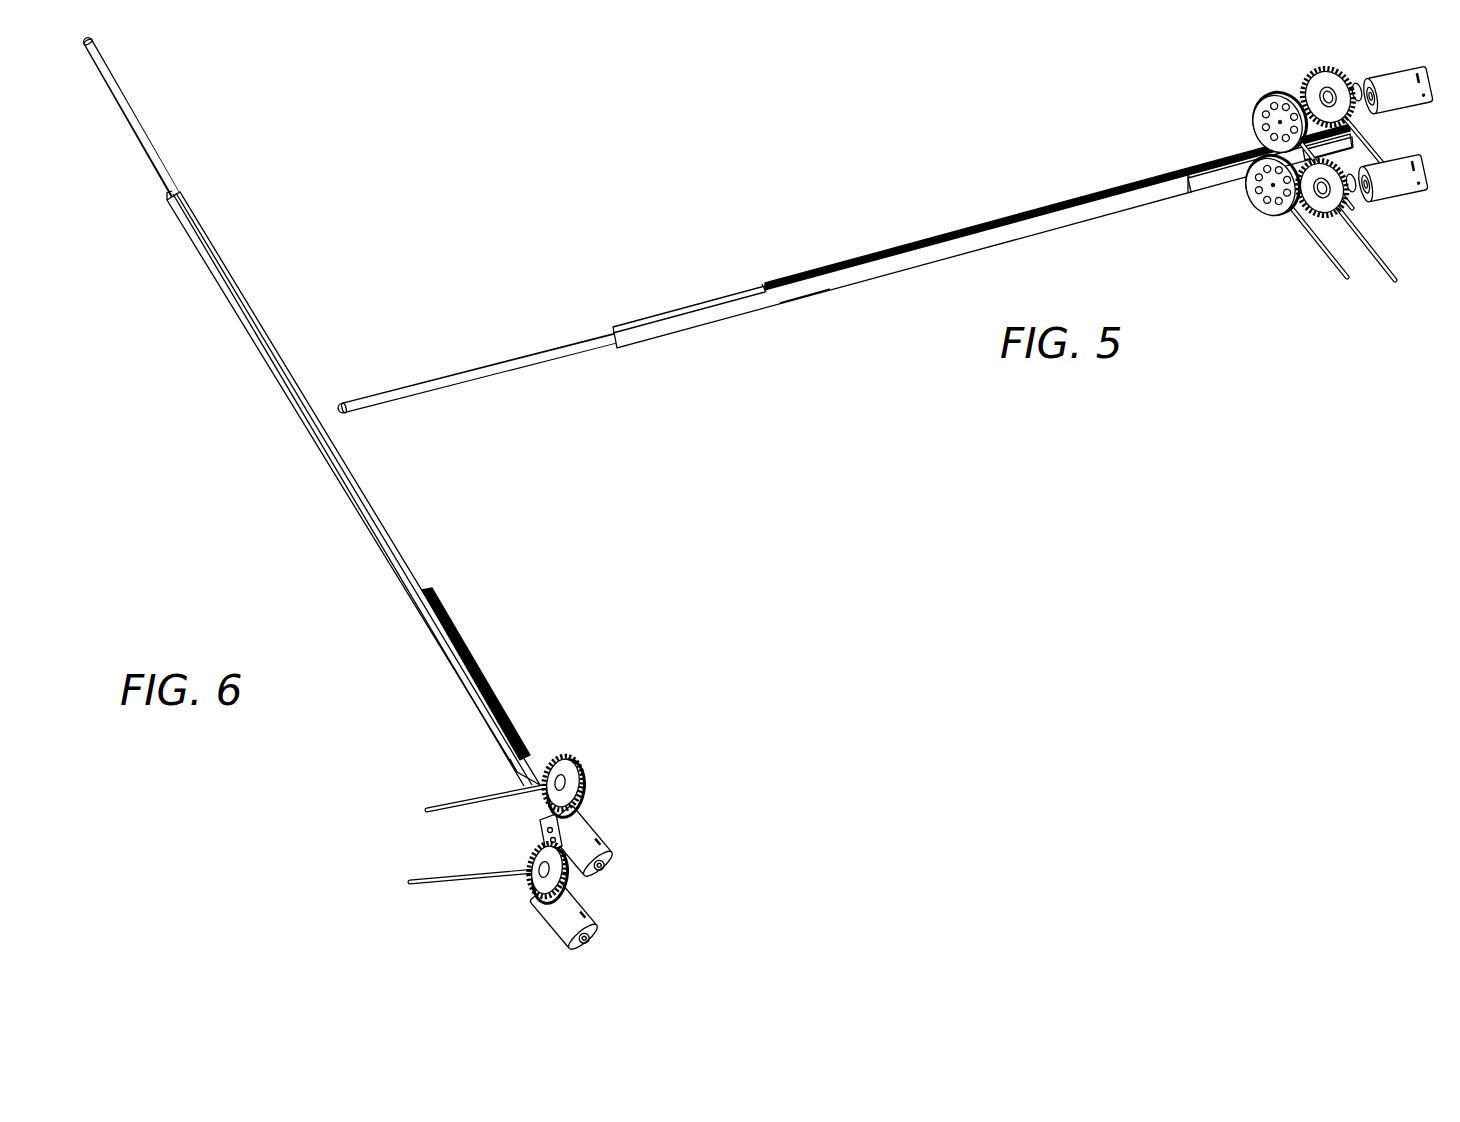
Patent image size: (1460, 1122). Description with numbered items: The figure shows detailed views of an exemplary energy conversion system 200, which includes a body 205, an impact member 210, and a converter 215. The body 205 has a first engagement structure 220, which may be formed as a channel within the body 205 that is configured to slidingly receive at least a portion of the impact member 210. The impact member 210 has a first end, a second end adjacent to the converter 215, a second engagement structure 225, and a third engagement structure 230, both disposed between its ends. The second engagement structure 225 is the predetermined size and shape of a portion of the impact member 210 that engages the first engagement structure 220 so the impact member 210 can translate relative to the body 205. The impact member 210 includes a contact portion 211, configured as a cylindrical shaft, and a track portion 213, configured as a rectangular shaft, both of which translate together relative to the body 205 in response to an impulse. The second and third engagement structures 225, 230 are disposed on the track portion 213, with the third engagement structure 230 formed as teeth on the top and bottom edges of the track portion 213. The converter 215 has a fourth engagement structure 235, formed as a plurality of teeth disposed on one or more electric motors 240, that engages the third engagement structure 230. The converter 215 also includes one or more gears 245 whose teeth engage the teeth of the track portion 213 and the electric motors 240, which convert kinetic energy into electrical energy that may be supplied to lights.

In FIG. 5, the energy conversion system 200 is at (650, 112).
In FIG. 5, the body 205 is at (661, 337).
In FIG. 6, the body 205 is at (273, 368).
In FIG. 5, the impact member 210 is at (777, 219).
In FIG. 5, the contact portion 211 is at (556, 349).
In FIG. 6, the contact portion 211 is at (122, 100).
In FIG. 5, the track portion 213 is at (797, 285).
In FIG. 6, the track portion 213 is at (468, 650).
In FIG. 5, the converter 215 is at (1356, 58).
In FIG. 6, the converter 215 is at (623, 818).
In FIG. 5, the first engagement structure 220 is at (795, 313).
In FIG. 5, the second engagement structure 225 is at (1216, 198).
In FIG. 5, the third engagement structure 230 is at (980, 205).
In FIG. 5, the fourth engagement structure 235 is at (1252, 97).
In FIG. 5, the electric motor 240 is at (1403, 105).
In FIG. 5, the gear 245 is at (1310, 68).